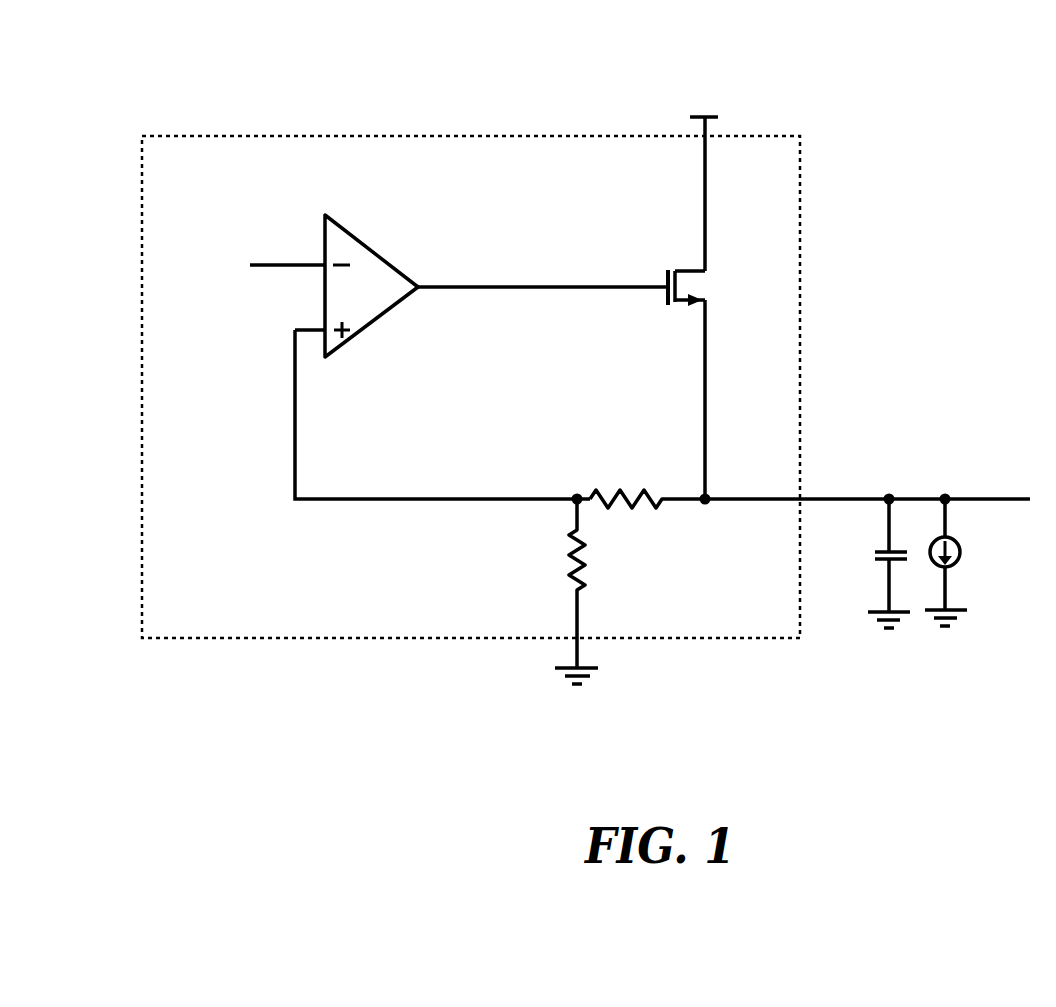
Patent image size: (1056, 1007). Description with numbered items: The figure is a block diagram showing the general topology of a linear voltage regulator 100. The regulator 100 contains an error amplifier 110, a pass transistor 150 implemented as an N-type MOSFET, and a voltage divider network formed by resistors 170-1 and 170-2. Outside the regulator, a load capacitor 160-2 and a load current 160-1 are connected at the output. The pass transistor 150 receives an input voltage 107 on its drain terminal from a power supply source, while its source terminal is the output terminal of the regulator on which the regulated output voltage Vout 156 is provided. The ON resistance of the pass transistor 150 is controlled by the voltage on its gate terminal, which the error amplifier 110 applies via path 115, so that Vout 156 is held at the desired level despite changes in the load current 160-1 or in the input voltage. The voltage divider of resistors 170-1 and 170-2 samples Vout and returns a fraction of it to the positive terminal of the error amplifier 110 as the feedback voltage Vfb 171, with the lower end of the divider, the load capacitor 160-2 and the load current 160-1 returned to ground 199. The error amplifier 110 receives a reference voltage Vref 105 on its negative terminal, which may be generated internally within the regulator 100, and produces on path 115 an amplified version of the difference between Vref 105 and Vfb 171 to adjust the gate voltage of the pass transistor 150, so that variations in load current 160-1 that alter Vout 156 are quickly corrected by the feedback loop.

The linear voltage regulator 100 is at (424, 78).
The reference voltage Vref 105 is at (260, 265).
The input voltage 107 is at (694, 117).
The error amplifier 110 is at (377, 308).
The path 115 is at (476, 287).
The pass transistor 150 is at (710, 283).
The regulated output voltage Vout 156 is at (834, 499).
The load current 160-1 is at (996, 544).
The load capacitor 160-2 is at (875, 555).
The resistor 170-1 is at (652, 504).
The resistor 170-2 is at (568, 566).
The feedback voltage Vfb 171 is at (424, 499).
The ground 199 is at (570, 668).